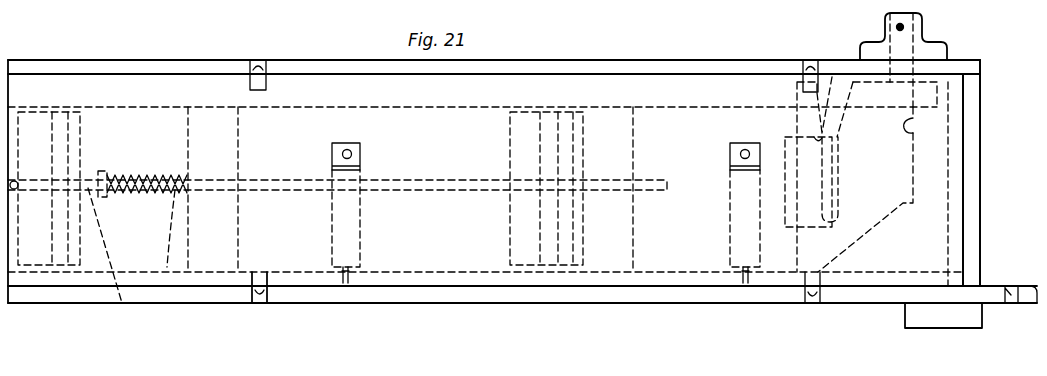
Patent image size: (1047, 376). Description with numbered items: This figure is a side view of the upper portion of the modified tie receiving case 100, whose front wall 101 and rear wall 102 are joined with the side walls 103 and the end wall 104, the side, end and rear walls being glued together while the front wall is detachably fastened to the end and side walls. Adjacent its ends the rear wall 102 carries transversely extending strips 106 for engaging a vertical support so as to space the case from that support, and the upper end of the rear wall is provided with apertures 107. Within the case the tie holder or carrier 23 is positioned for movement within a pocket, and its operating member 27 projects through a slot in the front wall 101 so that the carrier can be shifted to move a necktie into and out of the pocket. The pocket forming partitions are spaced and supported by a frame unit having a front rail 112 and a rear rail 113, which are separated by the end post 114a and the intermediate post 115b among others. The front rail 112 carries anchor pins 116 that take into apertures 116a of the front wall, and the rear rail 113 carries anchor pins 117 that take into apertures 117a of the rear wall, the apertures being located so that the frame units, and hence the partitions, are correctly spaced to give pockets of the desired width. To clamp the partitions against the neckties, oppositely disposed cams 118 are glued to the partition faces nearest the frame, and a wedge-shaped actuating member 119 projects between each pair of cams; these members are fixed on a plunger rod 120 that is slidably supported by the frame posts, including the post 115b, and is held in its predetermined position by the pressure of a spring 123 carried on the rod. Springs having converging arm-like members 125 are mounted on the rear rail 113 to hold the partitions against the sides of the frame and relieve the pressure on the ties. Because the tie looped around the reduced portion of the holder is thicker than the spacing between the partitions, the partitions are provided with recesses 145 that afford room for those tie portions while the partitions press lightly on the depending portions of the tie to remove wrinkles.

The tie receiving case 100 is at (494, 171).
The front wall 101 is at (680, 64).
The rear wall 102 is at (484, 303).
The side walls 103 is at (165, 90).
The end wall 104 is at (972, 205).
The transversely extending strips 106 is at (900, 321).
The apertures 107 is at (1020, 274).
The front rail 112 is at (750, 107).
The rear rail 113 is at (790, 273).
The end post 114a is at (920, 132).
The intermediate post 115b is at (633, 258).
The anchor pins 116 is at (262, 66).
The apertures 116a is at (258, 62).
The anchor pins 117 is at (255, 290).
The apertures 117a is at (262, 302).
The cams 118 is at (83, 250).
The actuating member 119 is at (33, 268).
The plunger rod 120 is at (122, 303).
The spring 123 is at (167, 280).
The arm-like members 125 is at (360, 255).
The recesses 145 is at (832, 77).
The carrier 23 is at (952, 152).
The operating members 27 is at (922, 28).